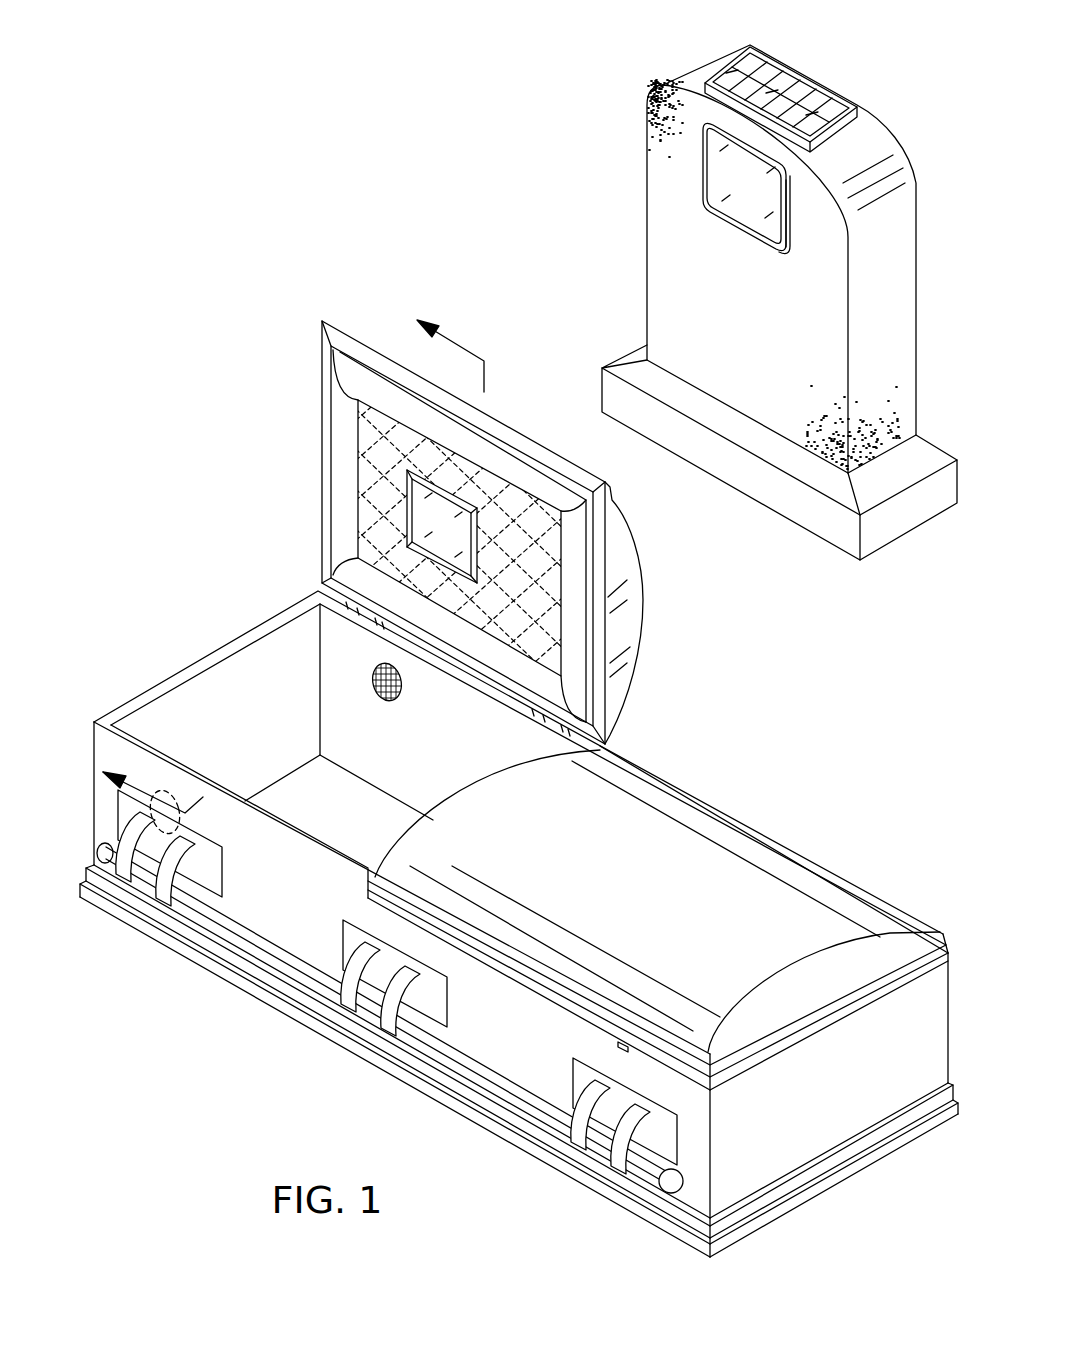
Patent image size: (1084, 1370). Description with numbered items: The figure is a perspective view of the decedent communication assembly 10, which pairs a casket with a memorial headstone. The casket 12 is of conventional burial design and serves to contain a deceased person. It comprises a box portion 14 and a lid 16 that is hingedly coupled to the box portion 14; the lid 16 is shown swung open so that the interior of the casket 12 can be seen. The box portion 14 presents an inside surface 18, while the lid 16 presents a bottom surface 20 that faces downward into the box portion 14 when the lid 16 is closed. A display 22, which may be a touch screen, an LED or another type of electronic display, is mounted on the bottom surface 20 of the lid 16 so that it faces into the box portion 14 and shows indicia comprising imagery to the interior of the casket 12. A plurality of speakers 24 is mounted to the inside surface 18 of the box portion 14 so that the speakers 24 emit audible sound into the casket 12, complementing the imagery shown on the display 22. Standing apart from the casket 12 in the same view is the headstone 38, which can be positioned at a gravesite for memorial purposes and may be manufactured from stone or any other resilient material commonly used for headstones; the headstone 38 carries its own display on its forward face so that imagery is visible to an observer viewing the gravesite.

The decedent communication assembly 10 is at (290, 204).
The casket 12 is at (150, 687).
The box portion 14 is at (86, 722).
The lid 16 is at (665, 534).
The inside surface 18 is at (236, 722).
The bottom surface 20 is at (376, 440).
The display 22 is at (455, 487).
The speakers 24 is at (371, 675).
The headstone 38 is at (644, 198).